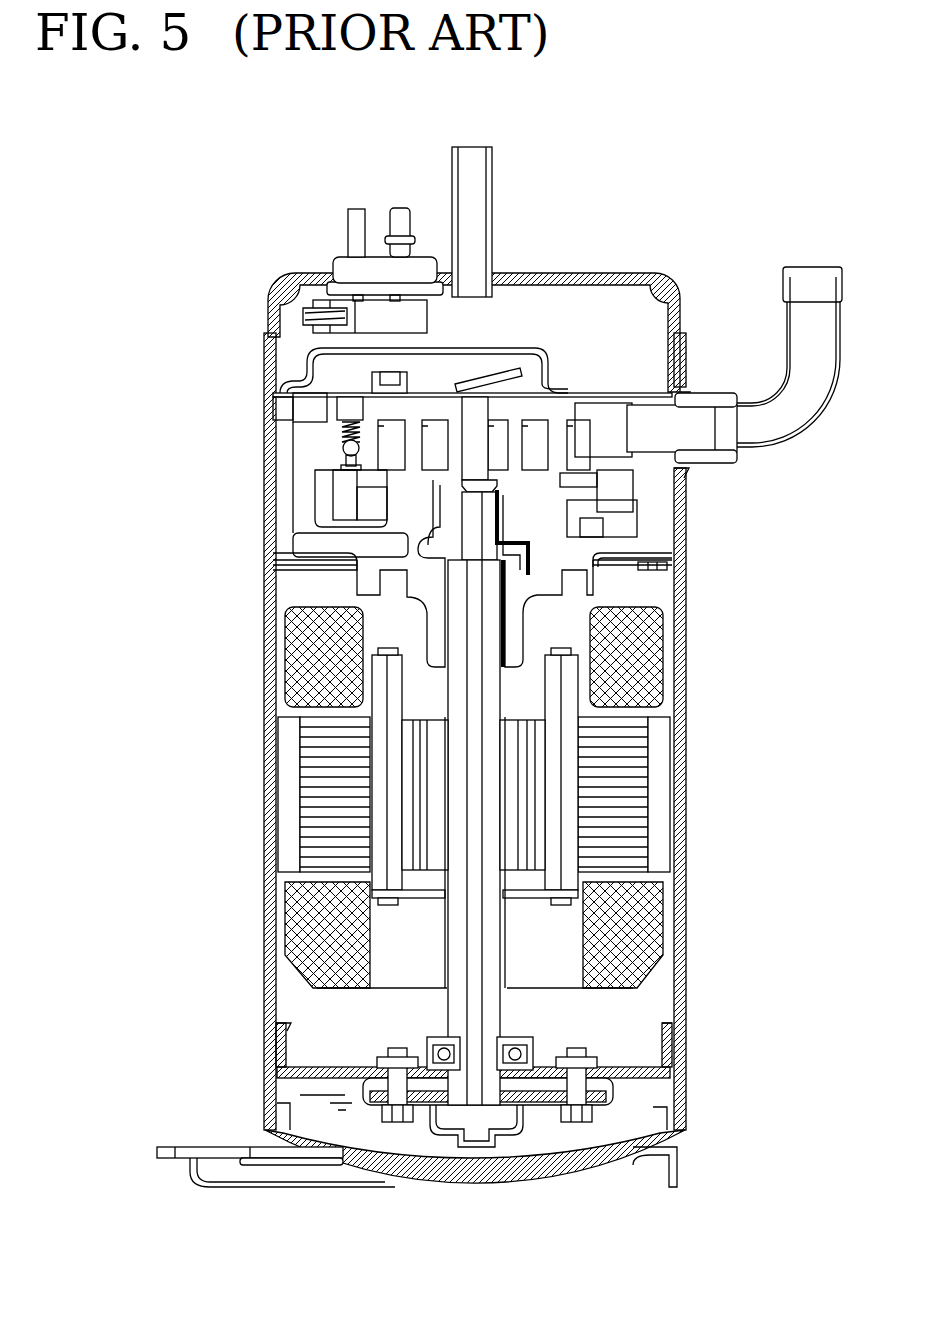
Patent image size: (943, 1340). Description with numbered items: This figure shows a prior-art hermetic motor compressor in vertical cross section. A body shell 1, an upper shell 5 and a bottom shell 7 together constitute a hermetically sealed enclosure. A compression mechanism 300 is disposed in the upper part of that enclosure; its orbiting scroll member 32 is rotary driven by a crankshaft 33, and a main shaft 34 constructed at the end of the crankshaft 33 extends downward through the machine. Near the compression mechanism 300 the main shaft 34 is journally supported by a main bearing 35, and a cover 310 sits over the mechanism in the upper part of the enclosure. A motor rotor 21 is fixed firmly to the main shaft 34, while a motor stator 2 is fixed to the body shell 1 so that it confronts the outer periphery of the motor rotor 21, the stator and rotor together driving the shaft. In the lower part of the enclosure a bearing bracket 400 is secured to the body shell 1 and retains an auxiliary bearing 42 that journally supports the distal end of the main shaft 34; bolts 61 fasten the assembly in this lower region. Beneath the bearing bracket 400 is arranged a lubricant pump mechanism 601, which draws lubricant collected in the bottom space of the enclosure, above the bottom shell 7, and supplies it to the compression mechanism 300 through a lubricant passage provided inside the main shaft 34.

The body shell 1 is at (268, 830).
The motor stator 2 is at (635, 768).
The upper shell 5 is at (627, 273).
The bottom shell 7 is at (537, 1163).
The motor rotor 21 is at (377, 748).
The orbiting scroll member 32 is at (402, 480).
The crankshaft 33 is at (445, 522).
The main shaft 34 is at (497, 927).
The main bearing 35 is at (513, 622).
The auxiliary bearing 42 is at (440, 1050).
The fastening bolt 61 is at (397, 1122).
The compression mechanism 300 is at (657, 530).
The discharge cover 310 is at (410, 405).
The bearing bracket 400 is at (680, 1035).
The lubricant pump mechanism 601 is at (610, 1088).